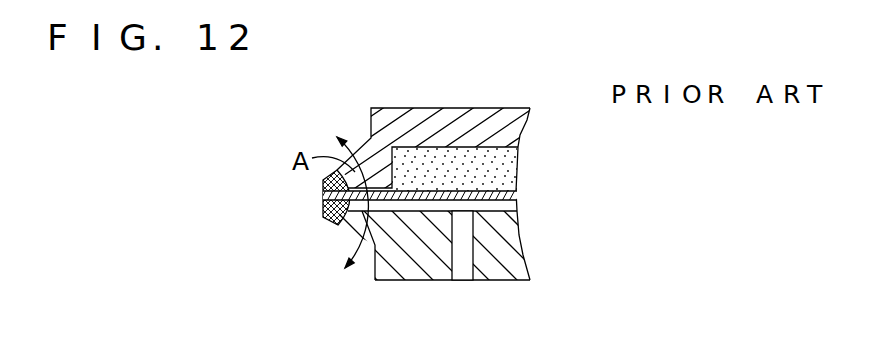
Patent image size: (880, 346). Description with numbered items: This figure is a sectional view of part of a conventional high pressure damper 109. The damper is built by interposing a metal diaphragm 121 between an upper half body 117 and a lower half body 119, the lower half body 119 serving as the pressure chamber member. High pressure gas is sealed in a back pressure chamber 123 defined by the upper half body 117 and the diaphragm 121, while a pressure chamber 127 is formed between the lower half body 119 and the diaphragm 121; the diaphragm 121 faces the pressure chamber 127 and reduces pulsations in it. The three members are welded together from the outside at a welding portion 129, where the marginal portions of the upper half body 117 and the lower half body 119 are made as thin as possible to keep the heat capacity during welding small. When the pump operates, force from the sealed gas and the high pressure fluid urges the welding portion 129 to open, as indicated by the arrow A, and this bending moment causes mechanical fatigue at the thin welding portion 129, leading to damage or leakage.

The high pressure damper 109 is at (603, 166).
The upper half body 117 is at (421, 117).
The lower half body 119 is at (420, 268).
The metal diaphragm 121 is at (518, 185).
The back pressure chamber 123 is at (463, 165).
The pressure chamber 127 is at (505, 206).
The welding portion 129 is at (338, 218).